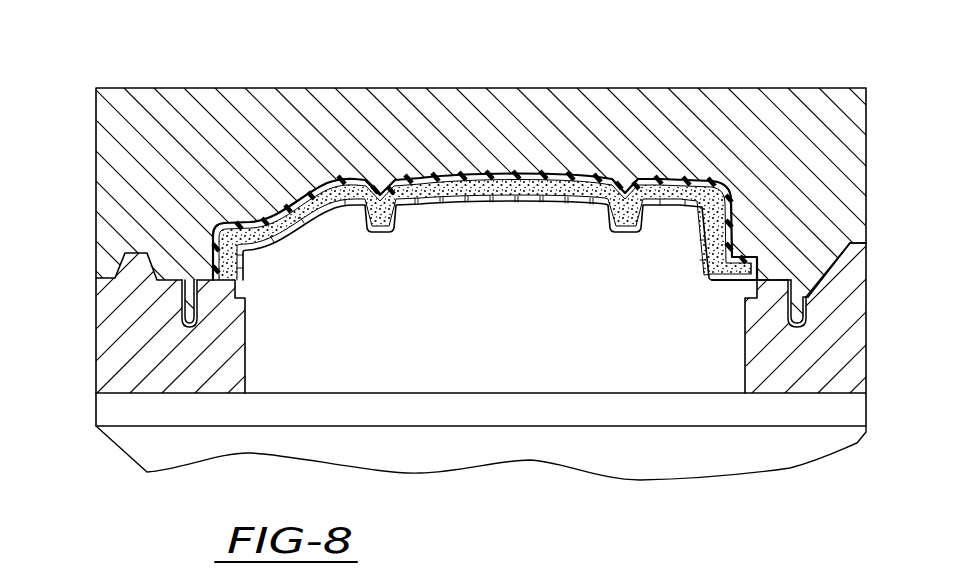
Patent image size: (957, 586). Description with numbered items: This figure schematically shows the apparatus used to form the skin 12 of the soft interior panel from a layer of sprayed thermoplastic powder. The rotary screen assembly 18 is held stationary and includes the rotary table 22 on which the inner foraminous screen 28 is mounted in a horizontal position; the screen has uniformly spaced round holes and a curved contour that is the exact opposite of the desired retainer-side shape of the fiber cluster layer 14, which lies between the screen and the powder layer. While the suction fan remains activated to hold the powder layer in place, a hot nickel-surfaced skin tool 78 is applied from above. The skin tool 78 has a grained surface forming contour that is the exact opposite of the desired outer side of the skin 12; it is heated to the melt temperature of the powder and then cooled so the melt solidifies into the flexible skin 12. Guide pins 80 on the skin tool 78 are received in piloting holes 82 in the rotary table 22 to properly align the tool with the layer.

The skin 12 is at (485, 169).
The fiber cluster layer 14 is at (445, 207).
The inner foraminous screen 28 is at (537, 207).
The skin tool 78 is at (733, 97).
The rotary table 22 is at (107, 337).
The guide pins 80 is at (186, 297).
The piloting holes 82 is at (192, 318).
The rotary screen assembly 18 is at (97, 387).